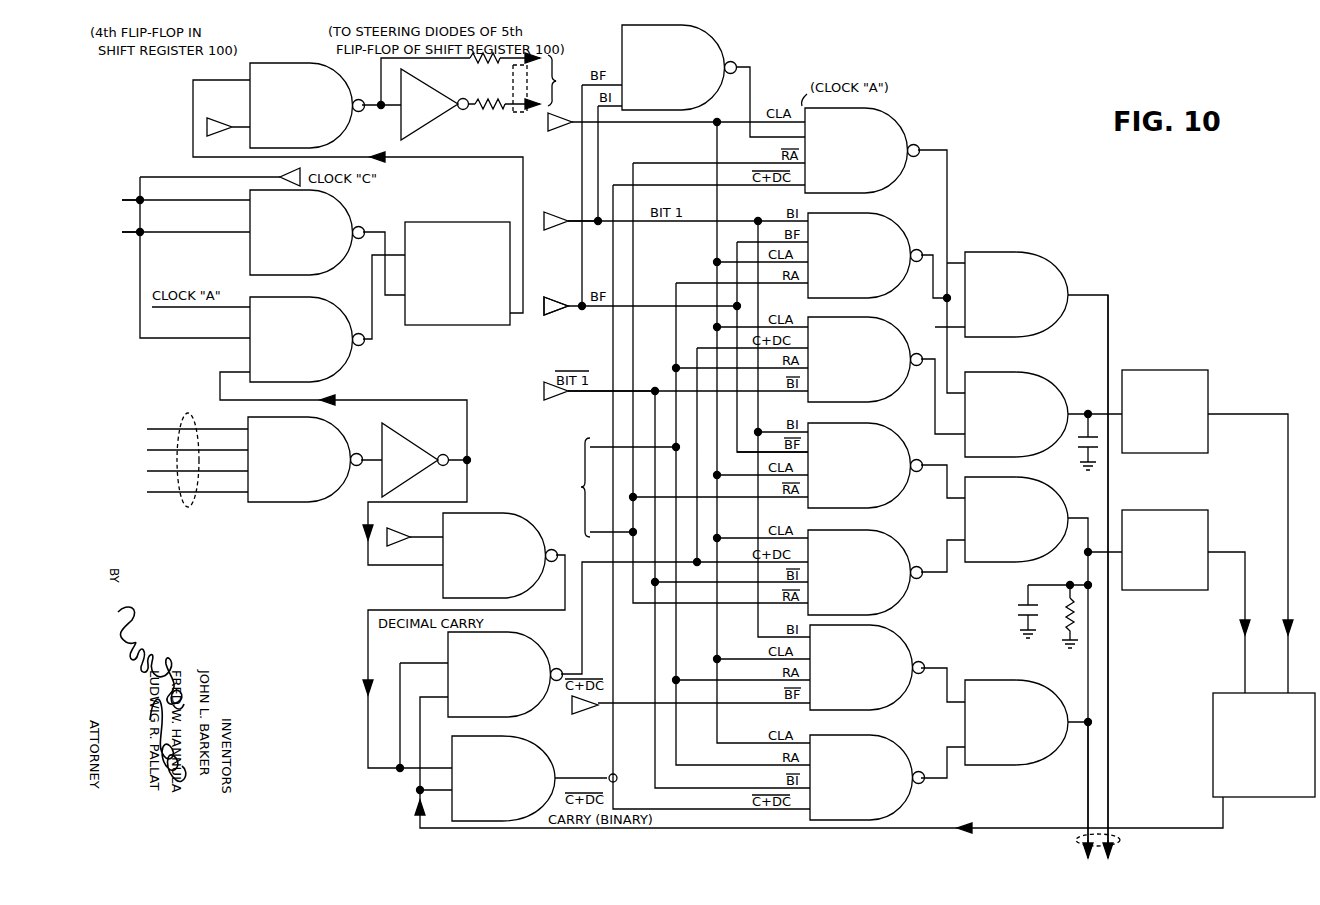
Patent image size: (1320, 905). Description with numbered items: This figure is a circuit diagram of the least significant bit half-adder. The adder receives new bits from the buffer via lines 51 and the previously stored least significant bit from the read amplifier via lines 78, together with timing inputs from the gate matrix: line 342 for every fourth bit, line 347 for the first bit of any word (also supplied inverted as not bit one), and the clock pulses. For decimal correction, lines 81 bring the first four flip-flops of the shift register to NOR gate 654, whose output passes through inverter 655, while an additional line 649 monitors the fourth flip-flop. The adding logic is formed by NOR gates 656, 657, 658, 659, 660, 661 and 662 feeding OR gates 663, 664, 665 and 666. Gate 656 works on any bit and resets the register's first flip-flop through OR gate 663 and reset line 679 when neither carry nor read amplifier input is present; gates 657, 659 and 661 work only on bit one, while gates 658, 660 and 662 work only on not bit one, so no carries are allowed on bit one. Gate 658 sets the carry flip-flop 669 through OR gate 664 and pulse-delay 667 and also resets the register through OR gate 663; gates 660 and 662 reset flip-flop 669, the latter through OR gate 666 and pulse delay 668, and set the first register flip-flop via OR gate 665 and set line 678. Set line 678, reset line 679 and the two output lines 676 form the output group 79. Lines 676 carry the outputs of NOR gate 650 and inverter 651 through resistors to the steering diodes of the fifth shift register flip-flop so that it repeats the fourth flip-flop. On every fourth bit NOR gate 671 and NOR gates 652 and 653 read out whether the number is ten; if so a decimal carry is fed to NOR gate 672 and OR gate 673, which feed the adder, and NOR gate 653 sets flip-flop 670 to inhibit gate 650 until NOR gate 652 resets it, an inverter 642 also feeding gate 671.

The line from shift register 649 is at (238, 124).
The NOR gate 650 is at (345, 68).
The inverter 651 is at (422, 95).
The NOR gate 652 is at (348, 215).
The NOR gate 653 is at (352, 348).
The NOR gate 654 is at (336, 432).
The inverter 655 is at (405, 433).
The NOR gate 656 is at (905, 120).
The NOR gate 657 is at (908, 226).
The NOR gate 658 is at (908, 330).
The NOR gate 659 is at (908, 436).
The NOR gate 660 is at (908, 543).
The NOR gate 661 is at (908, 638).
The NOR gate 662 is at (908, 748).
The OR gate 663 is at (1055, 268).
The OR gate 664 is at (1055, 388).
The OR gate 665 is at (1055, 492).
The OR gate 666 is at (1040, 692).
The pulse-delay 667 is at (1175, 370).
The pulse delay 668 is at (1142, 590).
The carry flip-flop 669 is at (1213, 745).
The flip-flop 670 is at (455, 222).
The NOR gate 671 is at (548, 548).
The NOR gate 672 is at (543, 650).
The OR gate 673 is at (550, 778).
The output lines 676 is at (548, 106).
The set line 678 is at (1088, 812).
The reset line 679 is at (1108, 770).
The line 342 is at (125, 228).
The line 347 is at (655, 222).
The lines 51 is at (560, 318).
The lines 78 is at (576, 496).
The lines 81 is at (196, 503).
The inverter 642 is at (400, 532).
The output line group 79 is at (1118, 843).